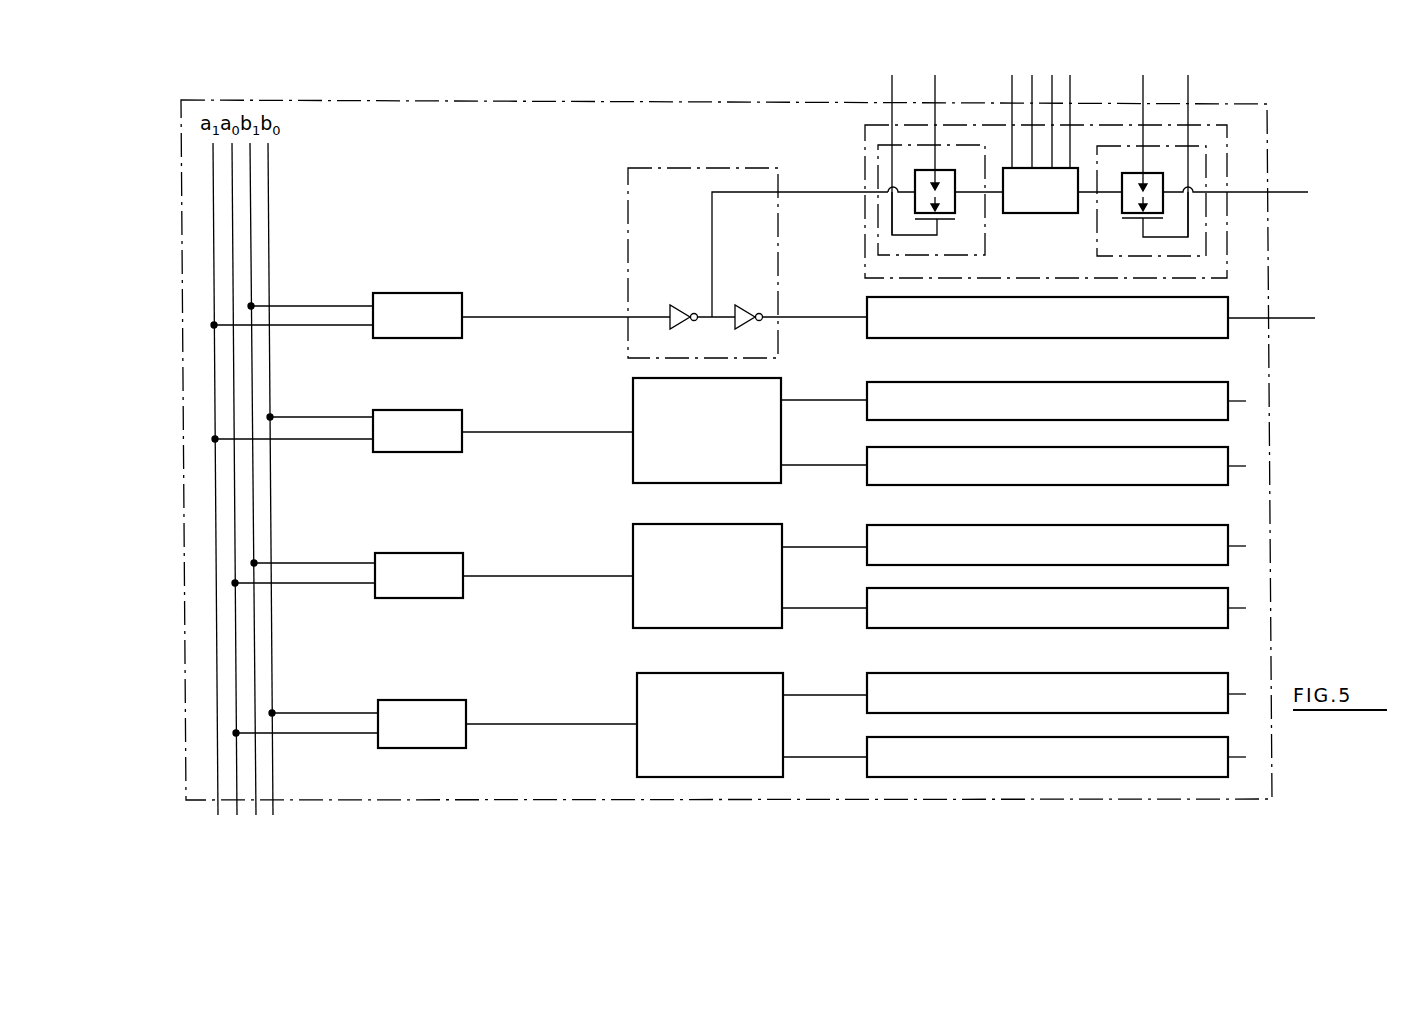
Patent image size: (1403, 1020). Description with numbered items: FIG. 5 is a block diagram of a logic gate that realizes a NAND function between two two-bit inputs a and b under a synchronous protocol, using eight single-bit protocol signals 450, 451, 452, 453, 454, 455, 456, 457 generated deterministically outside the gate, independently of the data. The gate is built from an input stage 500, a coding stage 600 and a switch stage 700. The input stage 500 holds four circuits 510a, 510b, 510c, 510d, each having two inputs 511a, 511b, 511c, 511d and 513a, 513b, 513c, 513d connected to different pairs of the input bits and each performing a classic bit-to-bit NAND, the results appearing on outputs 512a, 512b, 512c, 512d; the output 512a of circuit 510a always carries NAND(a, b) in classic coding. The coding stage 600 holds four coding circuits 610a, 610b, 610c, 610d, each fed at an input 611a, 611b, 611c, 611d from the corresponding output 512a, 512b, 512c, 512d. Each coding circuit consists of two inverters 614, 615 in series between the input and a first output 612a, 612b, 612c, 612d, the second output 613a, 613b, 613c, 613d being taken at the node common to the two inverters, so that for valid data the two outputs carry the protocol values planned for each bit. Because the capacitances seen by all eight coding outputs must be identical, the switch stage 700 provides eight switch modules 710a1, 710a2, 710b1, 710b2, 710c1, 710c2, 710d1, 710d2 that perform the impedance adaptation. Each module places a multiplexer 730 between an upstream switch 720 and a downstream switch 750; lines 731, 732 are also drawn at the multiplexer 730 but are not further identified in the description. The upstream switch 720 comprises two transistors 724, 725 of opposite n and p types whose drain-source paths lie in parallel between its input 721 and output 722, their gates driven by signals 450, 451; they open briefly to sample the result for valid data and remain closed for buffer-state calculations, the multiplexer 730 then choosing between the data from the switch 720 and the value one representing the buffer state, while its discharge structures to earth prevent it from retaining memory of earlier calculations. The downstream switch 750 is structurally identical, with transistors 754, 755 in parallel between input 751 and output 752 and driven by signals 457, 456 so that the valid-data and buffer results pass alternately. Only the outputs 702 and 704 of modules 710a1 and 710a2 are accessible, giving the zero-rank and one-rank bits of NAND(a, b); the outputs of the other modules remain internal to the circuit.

The protocol signal 450 is at (892, 135).
The protocol signal 451 is at (935, 103).
The protocol signal 452 is at (1012, 102).
The protocol signal 453 is at (1032, 102).
The protocol signal 454 is at (1052, 102).
The protocol signal 455 is at (1070, 102).
The protocol signal 456 is at (1143, 104).
The protocol signal 457 is at (1188, 136).
The input stage 500 is at (400, 226).
The circuit 510a is at (412, 293).
The circuit 510b is at (412, 410).
The circuit 510c is at (413, 553).
The circuit 510d is at (419, 700).
The input 511a is at (344, 306).
The input 511b is at (348, 417).
The input 511c is at (346, 563).
The input 511d is at (350, 713).
The output 512a is at (482, 317).
The output 512b is at (484, 432).
The output 512c is at (484, 576).
The output 512d is at (489, 724).
The input 513a is at (360, 325).
The input 513b is at (345, 439).
The input 513c is at (348, 583).
The input 513d is at (358, 733).
The coding stage 600 is at (667, 130).
The coding circuit 610a is at (697, 168).
The coding circuit 610b is at (707, 430).
The coding circuit 610c is at (707, 576).
The coding circuit 610d is at (710, 725).
The input 611a is at (598, 317).
The input 611b is at (598, 432).
The input 611c is at (598, 576).
The input 611d is at (601, 724).
The first output 612a is at (800, 317).
The first output 612b is at (814, 465).
The first output 612c is at (814, 608).
The first output 612d is at (814, 757).
The second output 613a is at (798, 191).
The second output 613b is at (812, 400).
The second output 613c is at (814, 547).
The second output 613d is at (814, 695).
The inverter 614 is at (678, 302).
The inverter 615 is at (744, 302).
The switch stage 700 is at (845, 132).
The output 702 is at (1305, 198).
The output 704 is at (1300, 322).
The switch module 710a1 is at (1227, 175).
The switch module 710a2 is at (1228, 308).
The switch module 710b1 is at (1056, 401).
The switch module 710b2 is at (1056, 466).
The switch module 710c1 is at (1056, 545).
The switch module 710c2 is at (1056, 608).
The switch module 710d1 is at (1056, 693).
The switch module 710d2 is at (1056, 757).
The upstream switch 720 is at (945, 259).
The input 721 is at (878, 198).
The output 722 is at (992, 210).
The switch transistor 724 is at (936, 218).
The switch transistor 725 is at (958, 168).
The multiplexer 730 is at (1040, 190).
The line 731 is at (1020, 240).
The line 732 is at (1088, 210).
The downstream switch 750 is at (1197, 254).
The input 751 is at (1110, 192).
The output 752 is at (1186, 150).
The transistor 754 is at (1147, 219).
The transistor 755 is at (1123, 169).